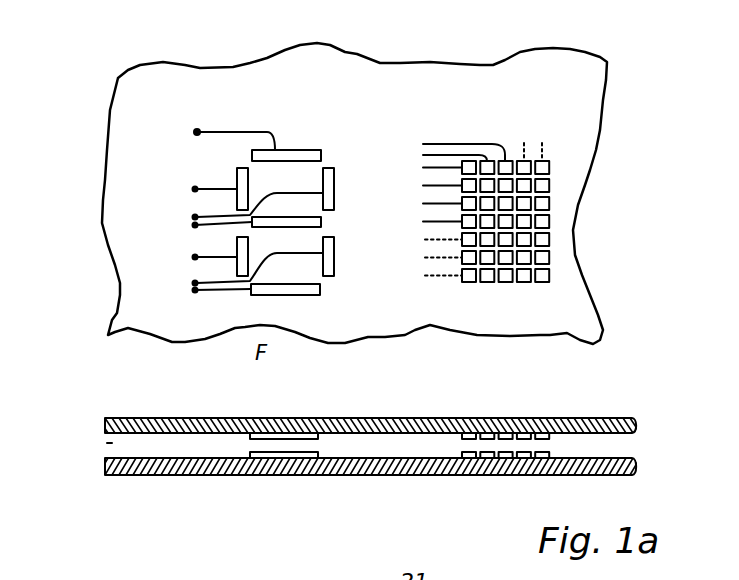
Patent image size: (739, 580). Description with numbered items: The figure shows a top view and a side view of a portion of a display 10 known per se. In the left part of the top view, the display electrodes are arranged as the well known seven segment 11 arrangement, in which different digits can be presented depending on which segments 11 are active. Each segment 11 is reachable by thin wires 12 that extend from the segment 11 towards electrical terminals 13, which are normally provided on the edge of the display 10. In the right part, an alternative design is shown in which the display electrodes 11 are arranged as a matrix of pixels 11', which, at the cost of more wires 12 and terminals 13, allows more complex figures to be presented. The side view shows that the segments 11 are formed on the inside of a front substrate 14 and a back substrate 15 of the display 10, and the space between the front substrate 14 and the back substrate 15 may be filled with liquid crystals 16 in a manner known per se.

The display 10 is at (388, 88).
The segment 11 is at (264, 328).
The matrix of pixels 11' is at (541, 300).
The thin wires 12 is at (228, 130).
The electrical terminals 13 is at (197, 132).
The front substrate 14 is at (105, 426).
The back substrate 15 is at (105, 467).
The liquid crystals 16 is at (107, 443).